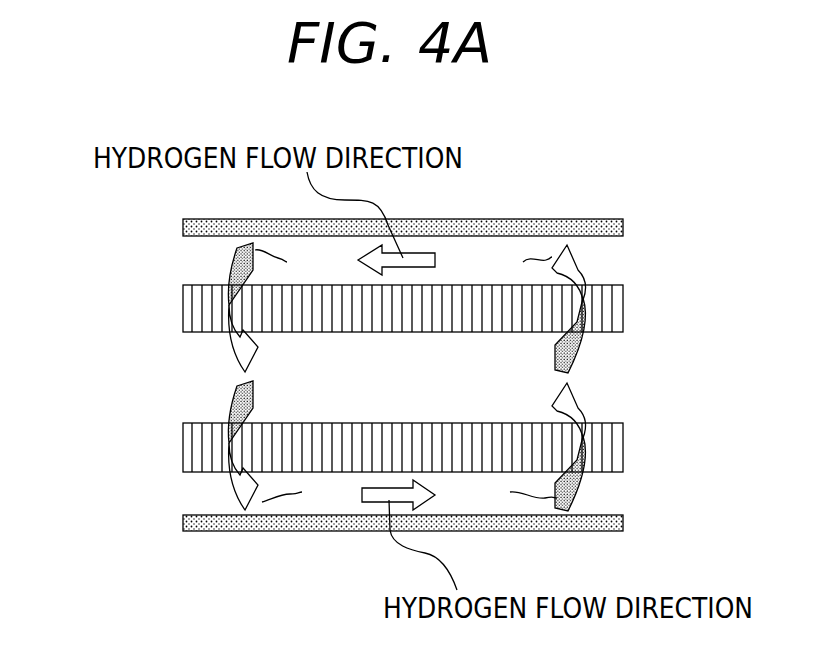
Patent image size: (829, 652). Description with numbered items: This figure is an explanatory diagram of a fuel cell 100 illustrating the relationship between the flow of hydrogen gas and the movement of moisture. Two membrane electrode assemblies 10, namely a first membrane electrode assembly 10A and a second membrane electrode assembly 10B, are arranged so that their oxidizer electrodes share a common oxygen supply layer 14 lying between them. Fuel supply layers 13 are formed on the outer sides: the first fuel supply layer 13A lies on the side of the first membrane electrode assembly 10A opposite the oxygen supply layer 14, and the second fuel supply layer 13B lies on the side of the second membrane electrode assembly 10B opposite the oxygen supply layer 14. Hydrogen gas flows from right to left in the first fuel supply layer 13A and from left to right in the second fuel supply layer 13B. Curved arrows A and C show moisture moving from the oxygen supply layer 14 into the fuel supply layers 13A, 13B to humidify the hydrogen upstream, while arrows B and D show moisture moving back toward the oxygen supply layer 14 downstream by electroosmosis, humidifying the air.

The fuel cell 100 is at (541, 175).
The membrane electrode assembly 10 is at (328, 348).
The first membrane electrode assembly 10A is at (184, 310).
The second membrane electrode assembly 10B is at (184, 448).
The fuel supply layer 13 is at (475, 375).
The first fuel supply layer 13A is at (613, 268).
The second fuel supply layer 13B is at (613, 497).
The oxygen supply layer 14 is at (620, 370).